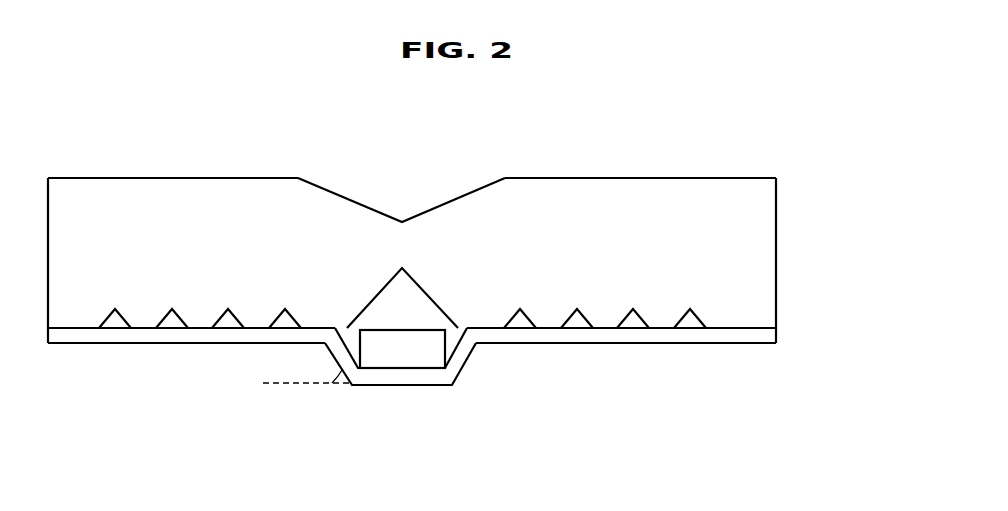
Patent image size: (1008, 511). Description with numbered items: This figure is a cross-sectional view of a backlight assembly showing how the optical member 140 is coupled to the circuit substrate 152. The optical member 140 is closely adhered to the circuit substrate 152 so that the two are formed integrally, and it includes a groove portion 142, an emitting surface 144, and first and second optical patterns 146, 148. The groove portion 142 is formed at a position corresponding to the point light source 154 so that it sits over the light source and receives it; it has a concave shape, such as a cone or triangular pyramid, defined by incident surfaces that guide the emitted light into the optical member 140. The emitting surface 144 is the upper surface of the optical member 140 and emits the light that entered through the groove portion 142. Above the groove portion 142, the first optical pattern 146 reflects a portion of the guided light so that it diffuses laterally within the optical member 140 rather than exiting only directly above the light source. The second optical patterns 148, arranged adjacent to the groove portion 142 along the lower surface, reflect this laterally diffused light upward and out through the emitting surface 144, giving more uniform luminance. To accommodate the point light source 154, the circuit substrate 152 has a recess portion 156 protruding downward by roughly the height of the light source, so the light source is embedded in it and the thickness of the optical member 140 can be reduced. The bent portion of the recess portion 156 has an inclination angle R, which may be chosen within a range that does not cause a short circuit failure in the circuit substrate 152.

The optical member 140 is at (790, 230).
The groove portion 142 is at (415, 300).
The emitting surface 144 is at (182, 177).
The first optical pattern 146 is at (408, 192).
The second optical pattern 148 is at (117, 324).
The circuit substrate 152 is at (698, 344).
The point light source 154 is at (453, 355).
The recess portion 156 is at (378, 397).
The inclination angle R is at (308, 369).